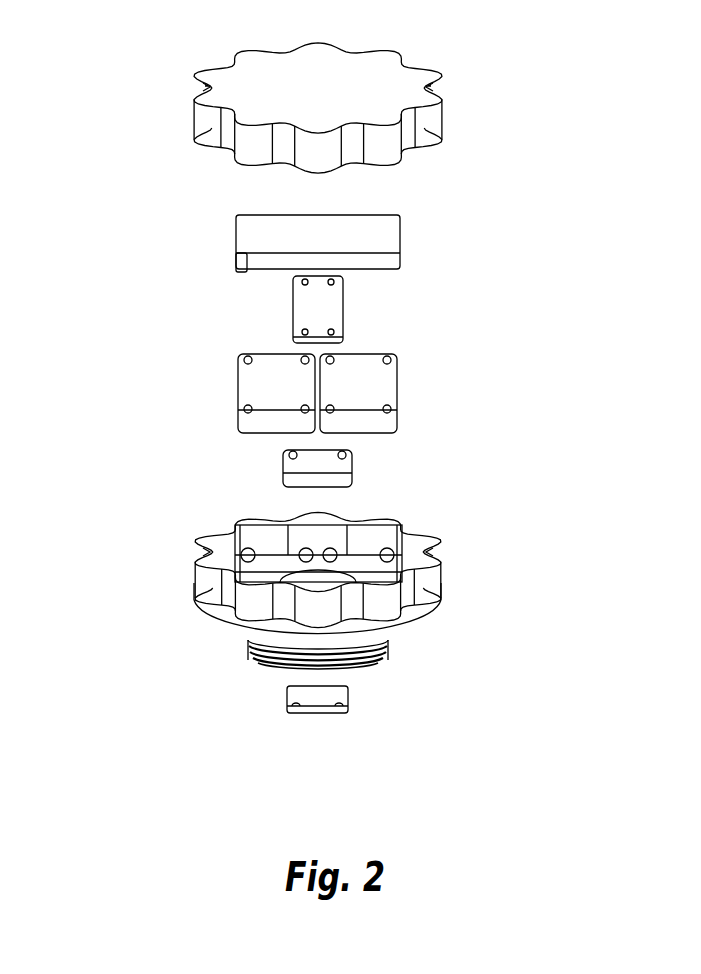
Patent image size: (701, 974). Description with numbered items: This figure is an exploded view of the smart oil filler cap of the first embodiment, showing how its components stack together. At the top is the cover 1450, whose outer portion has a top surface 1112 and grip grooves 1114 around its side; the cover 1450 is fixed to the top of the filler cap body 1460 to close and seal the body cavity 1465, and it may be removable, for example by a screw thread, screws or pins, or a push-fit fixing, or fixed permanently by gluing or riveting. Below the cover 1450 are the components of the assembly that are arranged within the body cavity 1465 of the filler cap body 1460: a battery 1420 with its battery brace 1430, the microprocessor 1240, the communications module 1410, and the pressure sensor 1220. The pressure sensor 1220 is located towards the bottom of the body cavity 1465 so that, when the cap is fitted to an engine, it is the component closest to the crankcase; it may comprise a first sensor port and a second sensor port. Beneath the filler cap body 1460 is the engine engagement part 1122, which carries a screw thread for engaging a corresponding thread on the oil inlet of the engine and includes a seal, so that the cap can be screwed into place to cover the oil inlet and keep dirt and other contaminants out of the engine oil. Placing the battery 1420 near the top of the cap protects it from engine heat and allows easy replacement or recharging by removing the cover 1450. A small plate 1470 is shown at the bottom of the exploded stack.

The top surface 1112 is at (267, 67).
The grip grooves 1114 is at (388, 147).
The cover 1450 is at (319, 111).
The battery 1420 is at (237, 232).
The battery brace 1430 is at (347, 310).
The microprocessor 1240 is at (238, 372).
The communications module 1410 is at (400, 383).
The pressure sensor 1220 is at (283, 470).
The body cavity 1465 is at (355, 548).
The filler cap body 1460 is at (328, 592).
The engine engagement part 1122 is at (248, 654).
The bottom plate 1470 is at (352, 697).